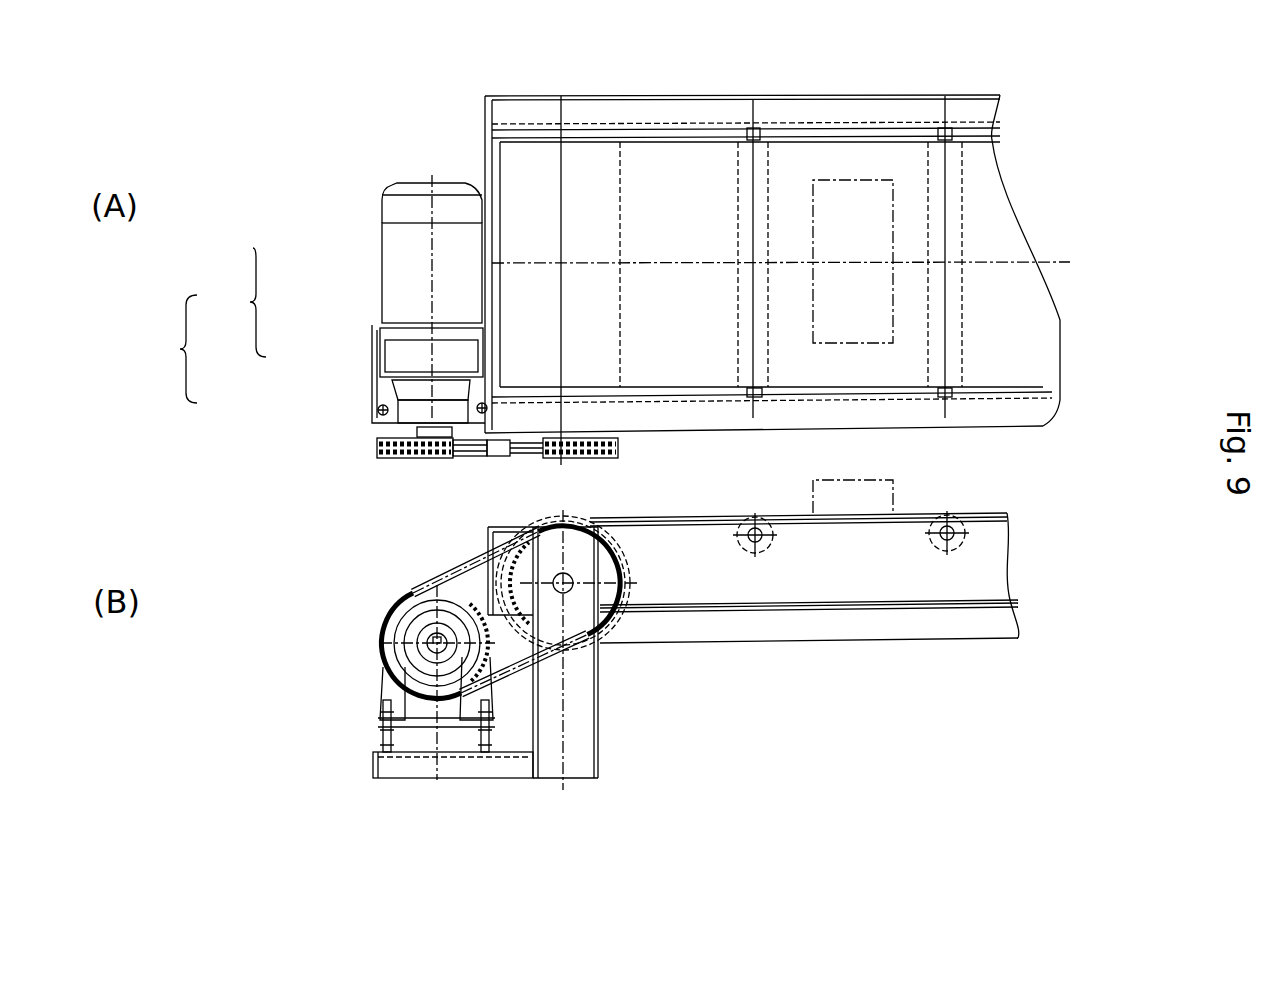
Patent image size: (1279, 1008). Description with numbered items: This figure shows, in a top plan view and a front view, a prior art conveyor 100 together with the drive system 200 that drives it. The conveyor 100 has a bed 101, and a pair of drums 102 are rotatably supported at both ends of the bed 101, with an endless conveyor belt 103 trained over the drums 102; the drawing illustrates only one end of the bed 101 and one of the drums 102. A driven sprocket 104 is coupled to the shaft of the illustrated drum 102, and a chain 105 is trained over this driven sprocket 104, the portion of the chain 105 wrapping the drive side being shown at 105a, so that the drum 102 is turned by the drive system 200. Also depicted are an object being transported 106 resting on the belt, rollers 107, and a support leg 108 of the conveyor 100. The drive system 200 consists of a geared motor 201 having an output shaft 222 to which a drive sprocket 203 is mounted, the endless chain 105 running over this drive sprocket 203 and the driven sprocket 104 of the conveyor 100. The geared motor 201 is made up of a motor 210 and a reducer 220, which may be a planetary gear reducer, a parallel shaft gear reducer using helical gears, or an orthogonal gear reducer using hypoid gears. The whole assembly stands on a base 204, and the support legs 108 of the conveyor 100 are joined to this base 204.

The conveyor 100 is at (583, 57).
The bed 101 is at (675, 105).
The drum 102 is at (620, 200).
The endless conveyor belt 103 is at (905, 135).
The driven sprocket 104 is at (533, 462).
The chain 105 is at (502, 462).
The chain wrapped portion 105a is at (392, 596).
The object being transported 106 is at (893, 290).
The rollers 107 is at (930, 358).
The support leg 108 is at (598, 740).
The drive system 200 is at (166, 349).
The geared motor 201 is at (380, 688).
The drive sprocket 203 is at (467, 460).
The base 204 is at (372, 398).
The motor 210 is at (382, 270).
The reducer 220 is at (382, 350).
The output shaft 222 is at (415, 432).